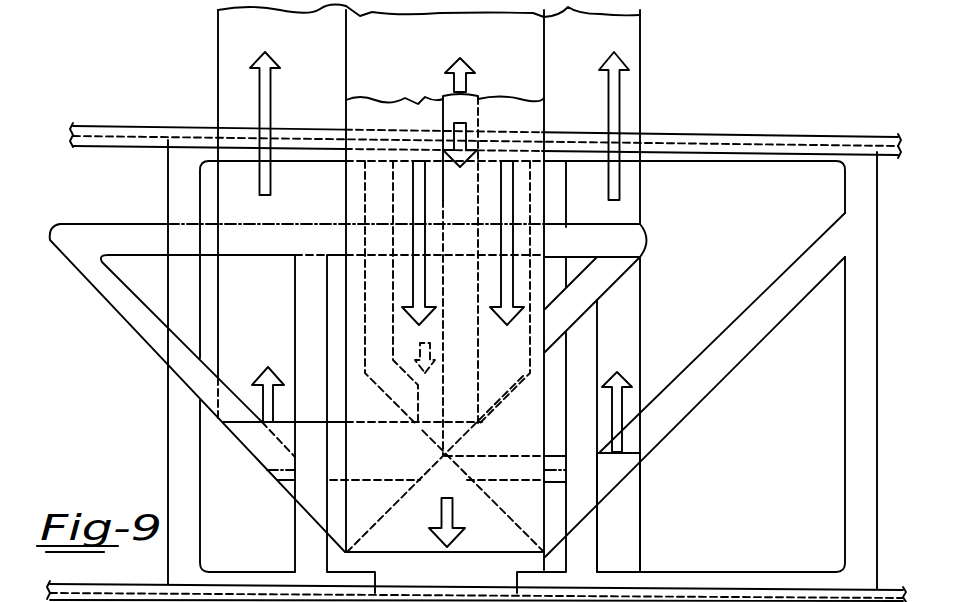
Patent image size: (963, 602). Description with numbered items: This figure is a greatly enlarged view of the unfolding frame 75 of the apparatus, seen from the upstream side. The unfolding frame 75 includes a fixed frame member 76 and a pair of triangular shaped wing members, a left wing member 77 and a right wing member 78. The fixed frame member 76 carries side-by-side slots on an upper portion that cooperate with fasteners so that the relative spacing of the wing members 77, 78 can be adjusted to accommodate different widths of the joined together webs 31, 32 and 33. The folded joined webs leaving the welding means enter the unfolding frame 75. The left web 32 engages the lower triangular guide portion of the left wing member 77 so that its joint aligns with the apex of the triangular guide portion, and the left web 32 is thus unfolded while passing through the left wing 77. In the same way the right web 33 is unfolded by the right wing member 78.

The web 31 is at (470, 203).
The left web 32 is at (420, 97).
The right web 33 is at (637, 343).
The unfolding frame 75 is at (740, 99).
The fixed frame member 76 is at (773, 133).
The left wing member 77 is at (140, 333).
The right wing member 78 is at (686, 398).